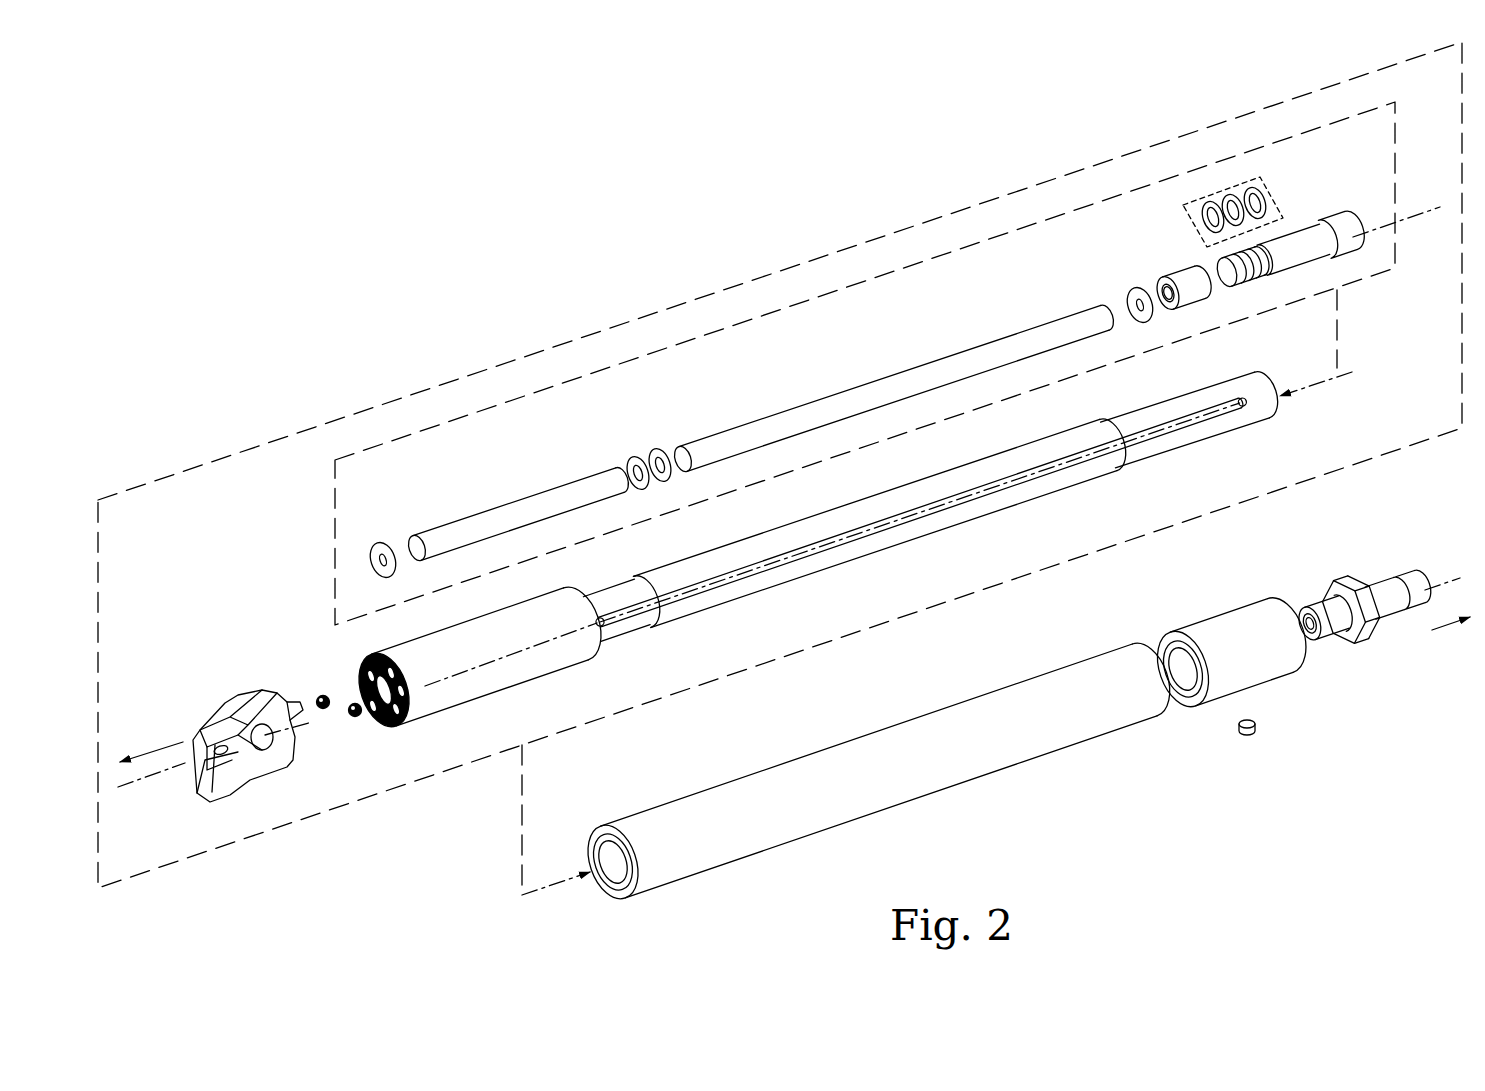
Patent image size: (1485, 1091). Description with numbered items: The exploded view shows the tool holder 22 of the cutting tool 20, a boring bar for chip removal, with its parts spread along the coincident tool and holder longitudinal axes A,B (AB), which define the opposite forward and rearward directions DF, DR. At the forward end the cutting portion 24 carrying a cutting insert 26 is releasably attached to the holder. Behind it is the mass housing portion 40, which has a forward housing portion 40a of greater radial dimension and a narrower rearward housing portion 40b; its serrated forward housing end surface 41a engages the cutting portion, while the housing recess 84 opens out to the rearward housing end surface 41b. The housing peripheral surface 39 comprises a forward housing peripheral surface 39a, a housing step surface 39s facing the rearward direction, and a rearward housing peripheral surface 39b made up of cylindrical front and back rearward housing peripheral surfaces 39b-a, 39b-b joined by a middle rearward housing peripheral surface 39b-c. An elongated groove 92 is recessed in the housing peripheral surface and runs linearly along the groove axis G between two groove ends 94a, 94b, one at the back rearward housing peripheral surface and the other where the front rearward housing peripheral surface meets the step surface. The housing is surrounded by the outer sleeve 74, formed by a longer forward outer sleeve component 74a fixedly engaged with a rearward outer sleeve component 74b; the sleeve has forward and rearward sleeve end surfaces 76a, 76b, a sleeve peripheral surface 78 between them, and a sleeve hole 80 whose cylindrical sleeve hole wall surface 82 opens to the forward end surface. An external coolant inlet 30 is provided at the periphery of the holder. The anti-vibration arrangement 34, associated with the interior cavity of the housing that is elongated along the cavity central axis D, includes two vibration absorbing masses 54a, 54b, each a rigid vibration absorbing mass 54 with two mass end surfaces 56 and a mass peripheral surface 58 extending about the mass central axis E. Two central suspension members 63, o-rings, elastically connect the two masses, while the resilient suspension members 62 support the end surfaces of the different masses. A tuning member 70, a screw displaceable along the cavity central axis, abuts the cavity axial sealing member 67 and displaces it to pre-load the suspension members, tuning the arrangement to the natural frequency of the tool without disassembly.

The cutting tool 20 is at (784, 501).
The tool holder 22 is at (1009, 736).
The cutting portion 24 is at (259, 796).
The cutting insert 26 is at (206, 792).
The external coolant inlet 30 is at (1295, 583).
The anti-vibration arrangement 34 is at (888, 773).
The housing peripheral surface 39 is at (768, 583).
The forward housing peripheral surface 39a is at (474, 561).
The rearward housing peripheral surface 39b is at (882, 520).
The front rearward housing peripheral surface 39b-a is at (604, 652).
The back rearward housing peripheral surface 39b-b is at (1202, 402).
The middle rearward housing peripheral surface 39b-c is at (895, 545).
The housing step surface 39s is at (587, 587).
The mass housing portion 40 is at (921, 529).
The forward housing portion 40a is at (474, 561).
The rearward housing portion 40b is at (888, 773).
The forward housing end surface 41a is at (385, 728).
The rearward housing end surface 41b is at (1253, 378).
The vibration absorbing mass 54 is at (770, 339).
The first vibration absorbing mass 54a is at (525, 505).
The second vibration absorbing mass 54b is at (890, 327).
The mass end surfaces 56 is at (413, 536).
The mass peripheral surface 58 is at (908, 378).
The resilient suspension members 62 is at (385, 543).
The central suspension members 63 is at (658, 448).
The cavity axial sealing member 67 is at (1178, 286).
The tuning member 70 is at (1307, 252).
The outer sleeve 74 is at (888, 773).
The forward outer sleeve component 74a is at (888, 799).
The rearward outer sleeve component 74b is at (1270, 689).
The forward sleeve end surface 76a is at (624, 895).
The rearward sleeve end surface 76b is at (1297, 642).
The sleeve peripheral surface 78 is at (888, 799).
The sleeve hole 80 is at (610, 850).
The sleeve hole wall surface 82 is at (614, 862).
The housing recess 84 is at (1284, 409).
The elongated groove 92 is at (733, 585).
The groove end 94a is at (620, 643).
The groove end 94b is at (1202, 402).
The cavity central axis D is at (1407, 215).
The mass central axis E is at (135, 782).
The groove axis G is at (474, 583).
The forward direction DF is at (151, 739).
The rearward direction DR is at (1451, 642).
The tool longitudinal axis and holder longitudinal axis AB is at (1437, 577).